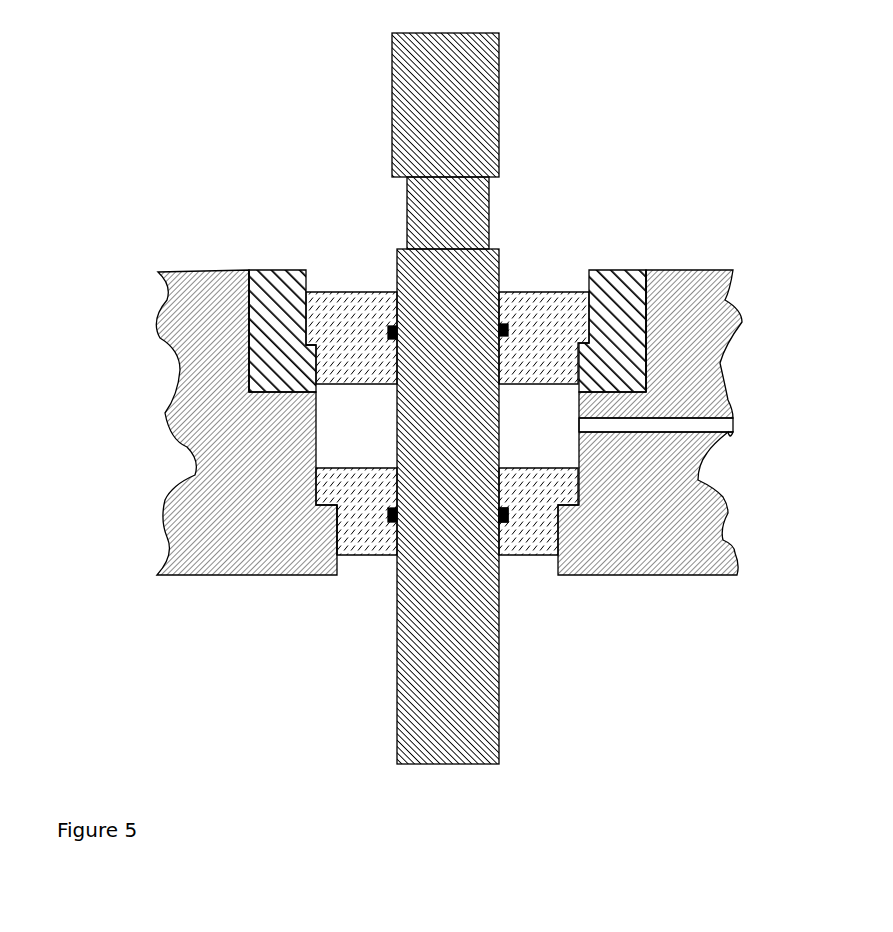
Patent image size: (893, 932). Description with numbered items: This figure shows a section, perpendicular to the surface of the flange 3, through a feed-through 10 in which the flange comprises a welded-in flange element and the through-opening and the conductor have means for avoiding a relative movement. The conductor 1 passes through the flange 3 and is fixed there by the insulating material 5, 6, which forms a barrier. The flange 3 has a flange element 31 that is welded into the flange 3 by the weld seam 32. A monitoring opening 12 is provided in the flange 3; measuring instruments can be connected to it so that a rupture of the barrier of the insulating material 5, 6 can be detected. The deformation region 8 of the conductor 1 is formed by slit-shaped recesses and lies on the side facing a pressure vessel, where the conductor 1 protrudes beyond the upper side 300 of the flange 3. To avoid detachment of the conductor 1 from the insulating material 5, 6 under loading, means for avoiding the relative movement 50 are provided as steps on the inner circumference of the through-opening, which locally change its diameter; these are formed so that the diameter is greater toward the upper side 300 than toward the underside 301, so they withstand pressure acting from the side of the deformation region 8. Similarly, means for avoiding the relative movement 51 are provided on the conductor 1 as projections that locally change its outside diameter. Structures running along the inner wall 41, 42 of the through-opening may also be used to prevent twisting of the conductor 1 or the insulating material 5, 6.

The conductor 1 is at (499, 87).
The deformation region 8 is at (497, 202).
The flange 3 is at (203, 270).
The upper side 300 is at (170, 253).
The underside 301 is at (204, 592).
The feed-through 10 is at (268, 663).
The monitoring opening 12 is at (733, 423).
The flange element 31 is at (283, 270).
The weld seam 32 is at (248, 264).
The insulating material 6 is at (350, 297).
The inner wall 42 is at (313, 318).
The insulating material 5 is at (358, 547).
The inner wall 41 is at (344, 533).
The means for avoiding relative movement 50 is at (579, 333).
The means for avoiding relative movement 51 is at (502, 522).